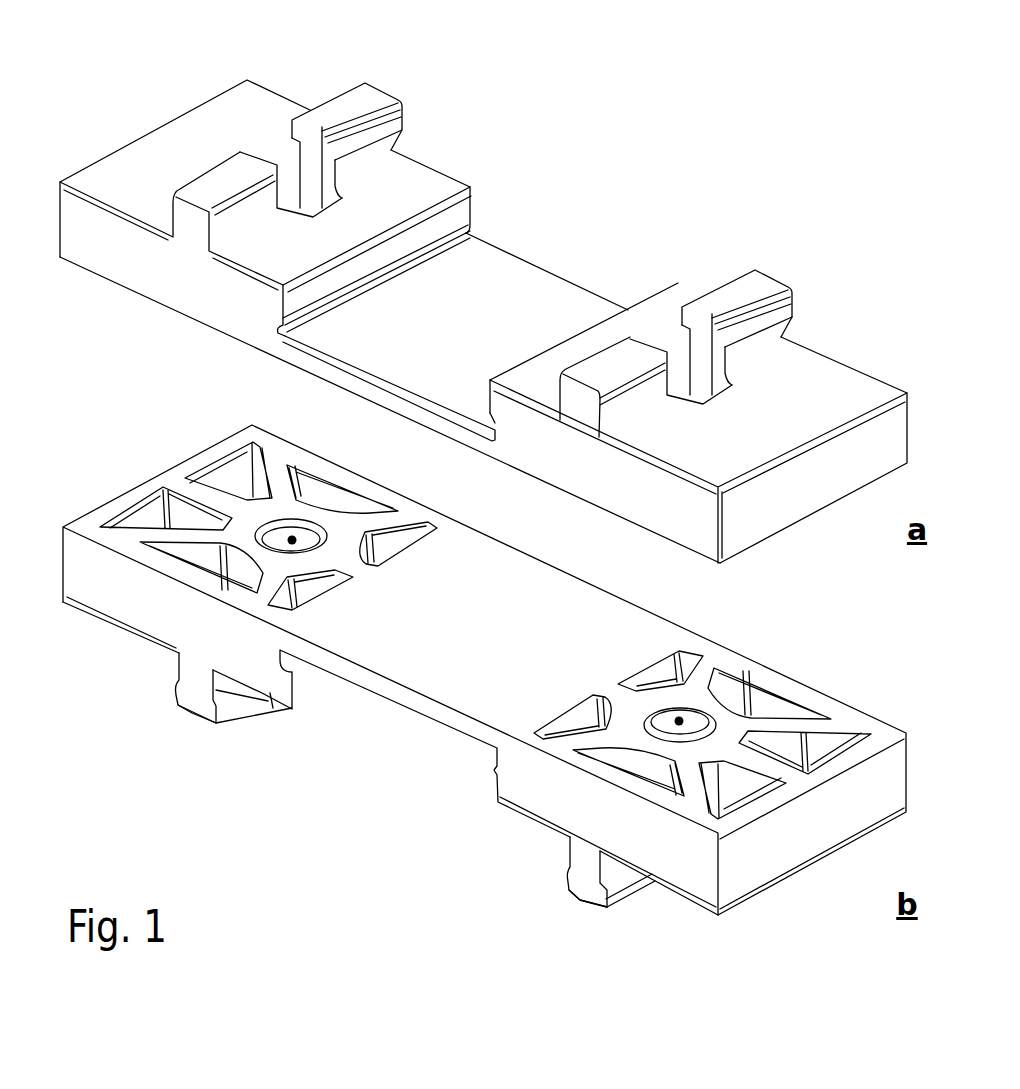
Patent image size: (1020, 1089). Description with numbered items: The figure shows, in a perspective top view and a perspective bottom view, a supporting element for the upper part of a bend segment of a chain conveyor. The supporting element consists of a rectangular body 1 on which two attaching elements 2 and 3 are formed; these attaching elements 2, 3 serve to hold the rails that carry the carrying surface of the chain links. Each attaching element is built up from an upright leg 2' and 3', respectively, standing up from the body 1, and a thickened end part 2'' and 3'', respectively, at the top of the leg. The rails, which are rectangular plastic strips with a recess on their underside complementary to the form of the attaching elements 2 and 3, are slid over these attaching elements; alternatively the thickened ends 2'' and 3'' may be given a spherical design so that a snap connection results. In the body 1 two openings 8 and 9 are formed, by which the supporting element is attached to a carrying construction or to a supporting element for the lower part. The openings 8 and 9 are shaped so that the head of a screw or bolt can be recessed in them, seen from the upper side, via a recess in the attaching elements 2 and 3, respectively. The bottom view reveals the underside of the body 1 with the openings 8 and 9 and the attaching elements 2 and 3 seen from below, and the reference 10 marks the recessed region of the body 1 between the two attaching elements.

The rectangular body 1 is at (543, 270).
The attaching element 2 is at (258, 399).
The upright leg 2' is at (279, 413).
The thickened end part 2'' is at (308, 411).
The attaching element 3 is at (652, 577).
The upright leg 3' is at (683, 598).
The thickened end part 3'' is at (695, 589).
The opening 8 is at (300, 208).
The opening 9 is at (688, 397).
The recess 10 is at (455, 337).